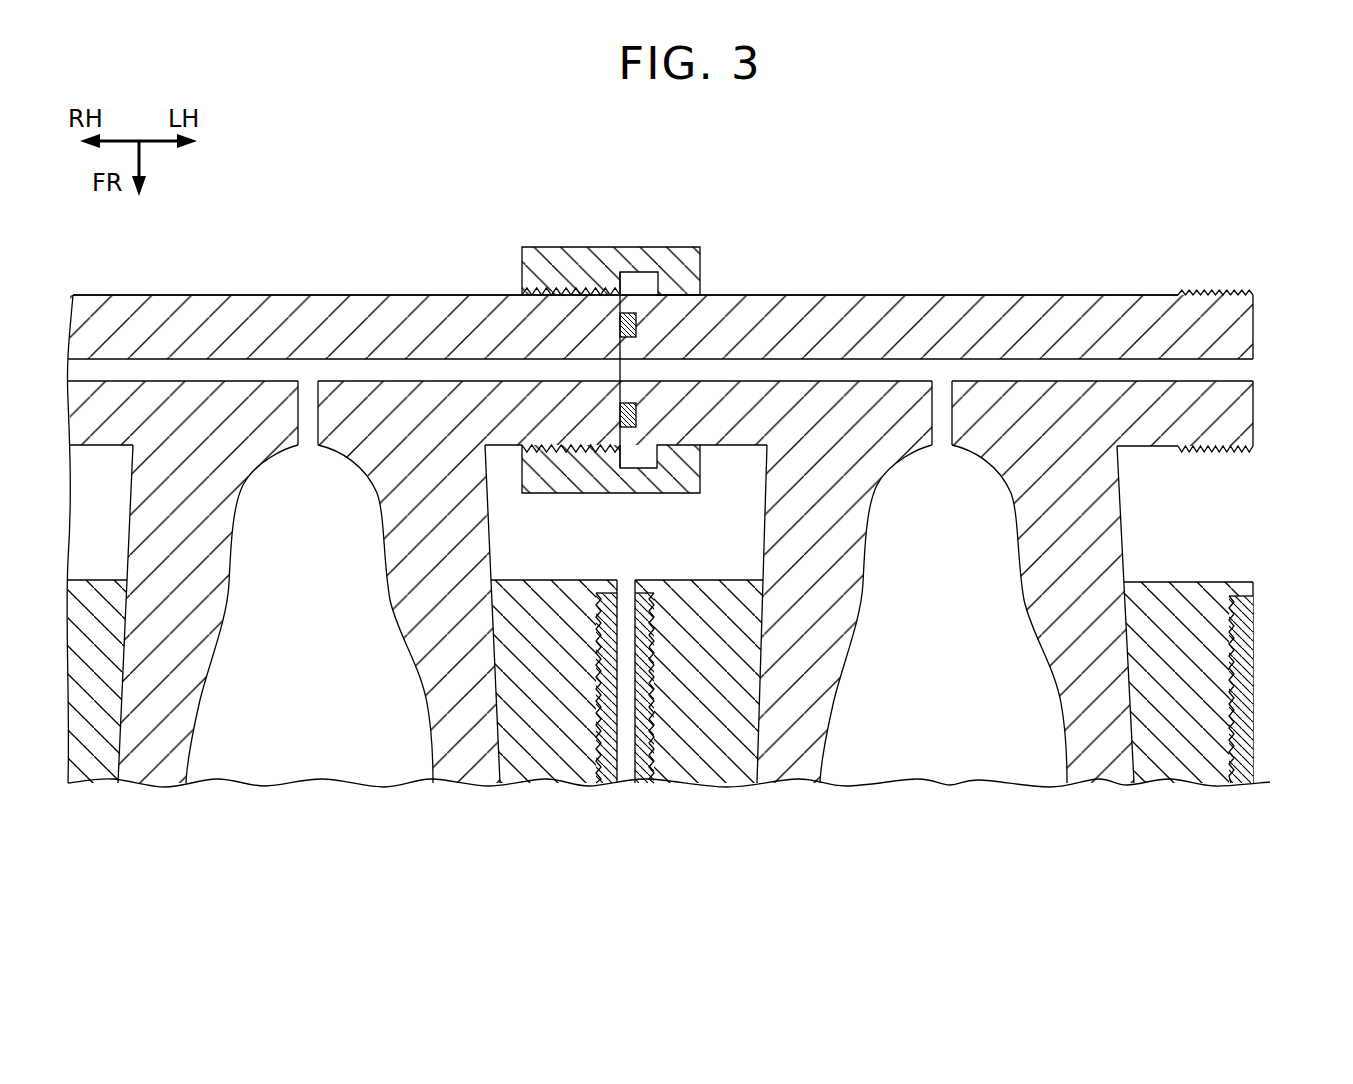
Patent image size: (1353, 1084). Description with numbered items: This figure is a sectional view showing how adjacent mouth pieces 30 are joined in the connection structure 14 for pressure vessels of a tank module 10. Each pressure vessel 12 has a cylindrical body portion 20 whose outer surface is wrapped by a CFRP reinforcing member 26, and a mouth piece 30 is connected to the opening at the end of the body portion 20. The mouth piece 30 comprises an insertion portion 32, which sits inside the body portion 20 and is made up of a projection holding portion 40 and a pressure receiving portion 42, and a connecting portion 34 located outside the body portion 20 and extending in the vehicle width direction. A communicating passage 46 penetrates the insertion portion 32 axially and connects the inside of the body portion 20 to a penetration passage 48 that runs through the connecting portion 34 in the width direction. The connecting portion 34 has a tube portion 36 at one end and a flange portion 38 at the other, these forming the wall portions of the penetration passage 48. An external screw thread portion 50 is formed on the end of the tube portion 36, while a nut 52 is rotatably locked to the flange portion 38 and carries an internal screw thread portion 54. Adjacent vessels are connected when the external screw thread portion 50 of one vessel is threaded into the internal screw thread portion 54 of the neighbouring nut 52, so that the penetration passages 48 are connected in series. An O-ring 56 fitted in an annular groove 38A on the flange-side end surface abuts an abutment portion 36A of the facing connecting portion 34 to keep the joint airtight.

The tank module 10 is at (895, 178).
The pressure vessel 12 is at (392, 257).
The connection structure for pressure vessels 14 is at (793, 235).
The body portion 20 is at (927, 732).
The reinforcing member 26 is at (601, 781).
The mouth piece 30 is at (338, 293).
The insertion portion 32 is at (468, 855).
The connecting portion 34 is at (247, 297).
The tube portion 36 is at (590, 316).
The abutment portion 36A is at (633, 468).
The flange portion 38 is at (632, 282).
The annular groove 38A is at (645, 418).
The projection holding portion 40 is at (537, 770).
The pressure receiving portion 42 is at (481, 772).
The communicating passage 46 is at (317, 444).
The penetration passage 48 is at (168, 365).
The external screw thread portion 50 is at (580, 458).
The nut 52 is at (545, 247).
The internal screw thread portion 54 is at (556, 295).
The O-ring 56 is at (638, 327).